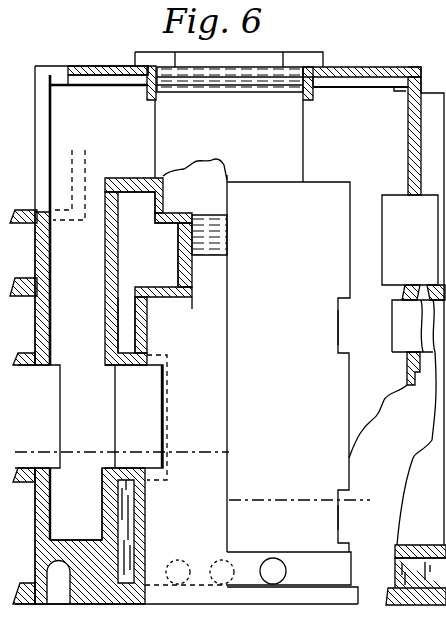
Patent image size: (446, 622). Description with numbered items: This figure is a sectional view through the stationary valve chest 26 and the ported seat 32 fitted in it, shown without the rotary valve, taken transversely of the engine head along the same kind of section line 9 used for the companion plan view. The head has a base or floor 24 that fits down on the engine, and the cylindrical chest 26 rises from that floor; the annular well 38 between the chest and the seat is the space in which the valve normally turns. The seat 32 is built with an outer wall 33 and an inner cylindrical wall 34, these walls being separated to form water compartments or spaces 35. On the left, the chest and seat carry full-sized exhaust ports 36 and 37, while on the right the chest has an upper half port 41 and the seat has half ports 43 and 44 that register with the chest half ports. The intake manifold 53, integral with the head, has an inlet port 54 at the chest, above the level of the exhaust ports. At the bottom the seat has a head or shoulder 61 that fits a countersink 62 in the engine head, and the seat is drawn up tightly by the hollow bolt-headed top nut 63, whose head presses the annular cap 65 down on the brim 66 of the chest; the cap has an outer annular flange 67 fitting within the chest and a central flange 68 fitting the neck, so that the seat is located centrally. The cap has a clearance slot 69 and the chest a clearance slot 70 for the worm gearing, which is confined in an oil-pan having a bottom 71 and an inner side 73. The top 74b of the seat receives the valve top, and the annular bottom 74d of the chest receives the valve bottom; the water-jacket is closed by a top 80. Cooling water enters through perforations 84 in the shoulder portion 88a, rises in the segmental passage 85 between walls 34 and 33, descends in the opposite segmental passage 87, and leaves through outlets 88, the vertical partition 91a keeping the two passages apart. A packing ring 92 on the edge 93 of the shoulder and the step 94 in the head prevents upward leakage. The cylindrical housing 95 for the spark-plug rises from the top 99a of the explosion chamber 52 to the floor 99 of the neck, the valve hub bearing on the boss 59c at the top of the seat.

The section line 9 is at (200, 477).
The base or floor 24 is at (29, 604).
The cylindrical valve chest 26 is at (28, 505).
The ported seat 32 is at (108, 597).
The outer wall of seat 33 is at (105, 296).
The inner cylindrical wall of seat 34 is at (147, 317).
The water compartments or spaces 35 is at (118, 238).
The exhaust port of chest 36 is at (36, 417).
The exhaust port of seat 37 is at (134, 416).
The annular well 38 is at (100, 186).
The upper half port 41 is at (392, 338).
The half port of seat 43 is at (339, 317).
The half port of seat 44 is at (338, 524).
The explosion chamber 52 is at (186, 470).
The intake manifold 53 is at (422, 184).
The inlet port 54 is at (387, 195).
The neck or boss 59c is at (230, 124).
The head, shoulder or step 61 is at (297, 586).
The countersink 62 is at (92, 580).
The hollow bolt-headed top nut 63 is at (291, 57).
The annular cap 65 is at (348, 68).
The brim 66 is at (413, 68).
The annular flange 67 is at (391, 90).
The central flange 68 is at (311, 97).
The clearance slot 69 is at (60, 67).
The clearance slot 70 is at (35, 187).
The bottom of oil-pan 71 is at (23, 228).
The inner side of oil-pan 73 is at (82, 159).
The top of seat 74b is at (130, 178).
The annular bottom of chest 74d is at (63, 532).
The top of water-jacket 80 is at (24, 282).
The perforations 84 is at (262, 572).
The segmental passage 85 is at (126, 325).
The opposite segmental passage 87 is at (416, 575).
The outlets 88 is at (210, 560).
The shoulder portion 88a is at (302, 574).
The vertical partition 91a is at (130, 530).
The packing ring 92 is at (278, 552).
The edge of shoulder 93 is at (329, 578).
The step or countersink 94 is at (100, 545).
The spark-plug housing 95 is at (180, 279).
The bottom or floor of neck 99 is at (190, 214).
The top of explosion chamber 99a is at (147, 286).